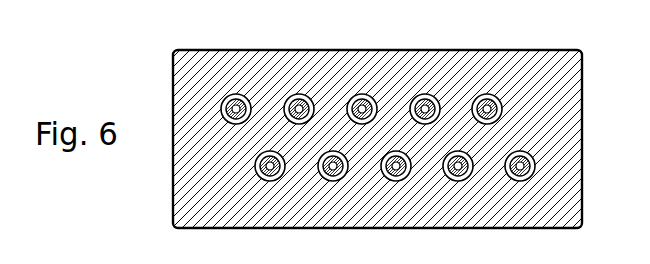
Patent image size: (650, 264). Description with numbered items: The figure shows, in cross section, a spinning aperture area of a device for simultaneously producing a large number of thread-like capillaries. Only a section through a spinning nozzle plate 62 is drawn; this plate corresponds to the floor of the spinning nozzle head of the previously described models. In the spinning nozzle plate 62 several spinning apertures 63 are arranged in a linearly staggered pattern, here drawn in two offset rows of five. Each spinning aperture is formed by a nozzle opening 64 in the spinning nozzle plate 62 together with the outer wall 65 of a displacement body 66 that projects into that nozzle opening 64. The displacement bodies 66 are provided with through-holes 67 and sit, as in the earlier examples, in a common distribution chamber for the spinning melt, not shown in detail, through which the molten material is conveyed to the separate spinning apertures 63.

The spinning nozzle plate 62 is at (576, 209).
The bores 63 is at (293, 95).
The nozzle openings 64 is at (231, 97).
The outer walls of the displacement bodies 65 is at (245, 113).
The displacement bodies 66 is at (239, 119).
The through-holes 67 is at (223, 101).